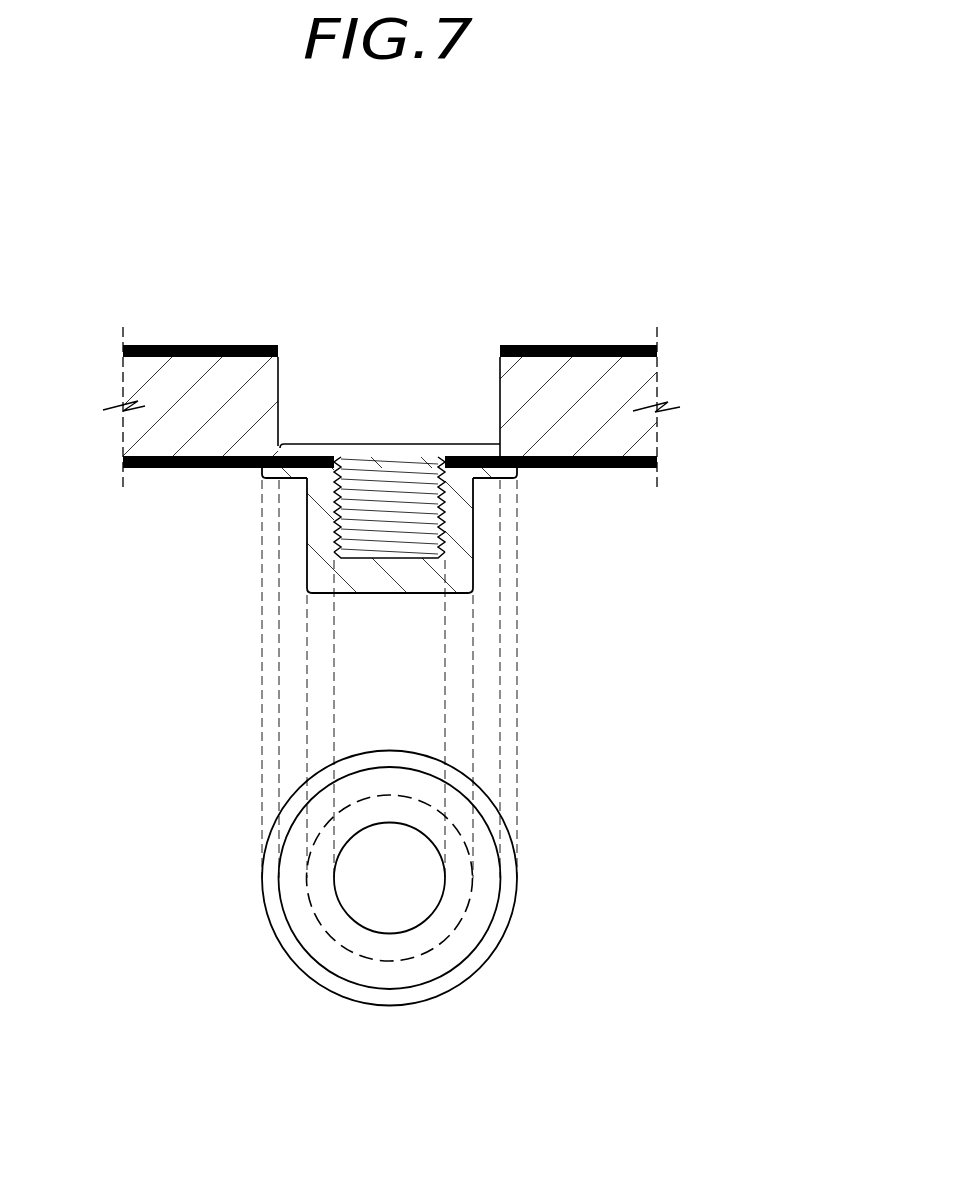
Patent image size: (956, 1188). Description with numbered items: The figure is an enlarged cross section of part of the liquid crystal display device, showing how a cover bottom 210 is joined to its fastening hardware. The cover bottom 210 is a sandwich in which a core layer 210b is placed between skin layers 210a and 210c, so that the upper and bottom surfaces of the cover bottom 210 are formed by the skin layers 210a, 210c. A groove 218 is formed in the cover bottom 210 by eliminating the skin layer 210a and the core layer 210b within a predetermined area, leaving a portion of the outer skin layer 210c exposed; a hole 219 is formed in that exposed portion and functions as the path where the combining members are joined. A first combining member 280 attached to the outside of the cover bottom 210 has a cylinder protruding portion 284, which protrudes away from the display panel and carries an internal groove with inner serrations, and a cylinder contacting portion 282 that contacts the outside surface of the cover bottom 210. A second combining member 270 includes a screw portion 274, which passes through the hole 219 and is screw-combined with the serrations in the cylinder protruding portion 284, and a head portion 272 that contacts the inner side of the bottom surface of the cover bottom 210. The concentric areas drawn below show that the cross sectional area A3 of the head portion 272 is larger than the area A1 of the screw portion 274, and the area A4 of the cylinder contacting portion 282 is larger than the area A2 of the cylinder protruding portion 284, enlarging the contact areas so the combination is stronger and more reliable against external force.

The cover bottom 210 is at (762, 452).
The skin layer 210a is at (657, 350).
The core layer 210b is at (645, 374).
The skin layer 210c is at (657, 458).
The groove 218 is at (280, 377).
The hole 219 is at (347, 457).
The second combining member 270 is at (510, 233).
The head portion 272 is at (448, 450).
The screw portion 274 is at (402, 467).
The first combining member 280 is at (112, 548).
The cylinder contacting portion 282 is at (262, 470).
The cylinder protruding portion 284 is at (337, 515).
The cross sectional area of the screw portion A1 is at (389, 878).
The cross sectional area of the cylinder protruding portion A2 is at (390, 878).
The cross sectional area of the head portion A3 is at (390, 878).
The cross sectional area of the cylinder contacting portion A4 is at (389, 880).